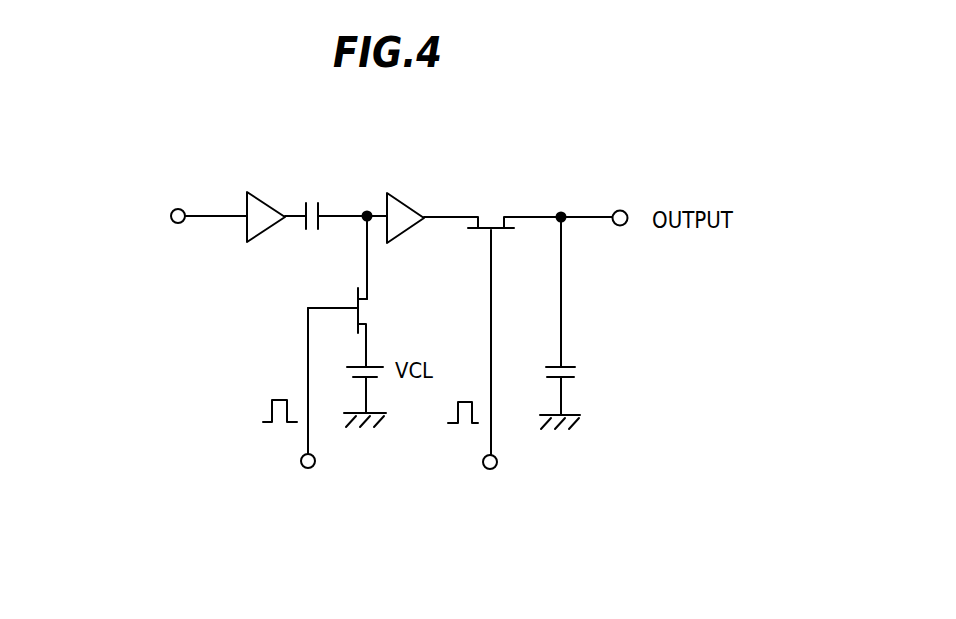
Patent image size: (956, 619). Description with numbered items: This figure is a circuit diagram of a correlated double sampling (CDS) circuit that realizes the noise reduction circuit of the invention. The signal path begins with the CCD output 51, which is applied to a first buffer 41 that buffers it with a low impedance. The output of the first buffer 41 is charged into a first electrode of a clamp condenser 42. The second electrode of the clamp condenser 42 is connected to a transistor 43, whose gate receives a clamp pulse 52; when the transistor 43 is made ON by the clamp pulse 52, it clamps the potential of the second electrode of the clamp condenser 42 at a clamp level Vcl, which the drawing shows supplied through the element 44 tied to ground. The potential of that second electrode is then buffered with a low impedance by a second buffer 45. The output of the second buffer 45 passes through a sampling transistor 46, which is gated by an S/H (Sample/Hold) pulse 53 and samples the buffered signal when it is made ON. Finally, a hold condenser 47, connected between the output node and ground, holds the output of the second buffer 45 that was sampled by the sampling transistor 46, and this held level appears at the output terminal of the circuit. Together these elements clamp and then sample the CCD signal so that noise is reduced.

The first buffer 41 is at (242, 228).
The clamp condenser 42 is at (313, 202).
The transistor 43 is at (363, 313).
The clamp capacitor 44 is at (365, 365).
The second buffer 45 is at (400, 199).
The sampling transistor 46 is at (490, 225).
The hold condenser 47 is at (573, 378).
The CCD output 51 is at (172, 210).
The clamp pulse 52 is at (301, 461).
The S/H (Sample/Hold) pulse 53 is at (490, 469).